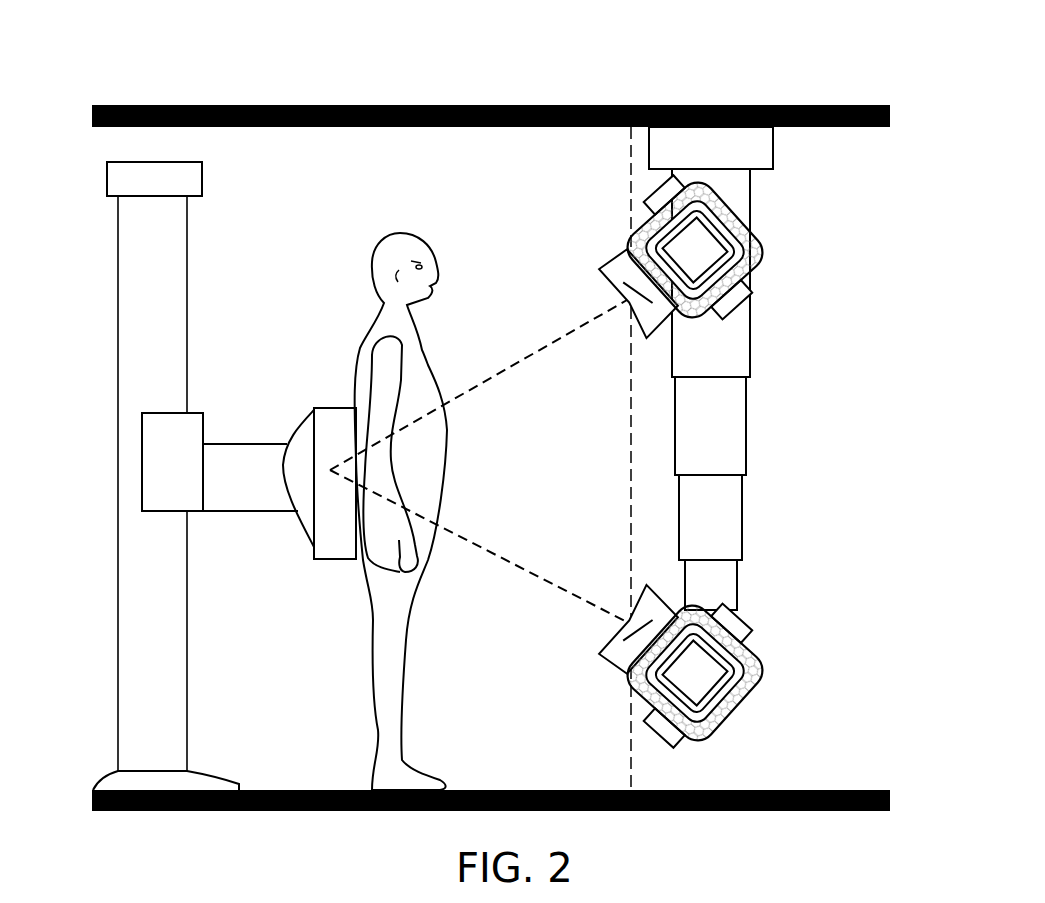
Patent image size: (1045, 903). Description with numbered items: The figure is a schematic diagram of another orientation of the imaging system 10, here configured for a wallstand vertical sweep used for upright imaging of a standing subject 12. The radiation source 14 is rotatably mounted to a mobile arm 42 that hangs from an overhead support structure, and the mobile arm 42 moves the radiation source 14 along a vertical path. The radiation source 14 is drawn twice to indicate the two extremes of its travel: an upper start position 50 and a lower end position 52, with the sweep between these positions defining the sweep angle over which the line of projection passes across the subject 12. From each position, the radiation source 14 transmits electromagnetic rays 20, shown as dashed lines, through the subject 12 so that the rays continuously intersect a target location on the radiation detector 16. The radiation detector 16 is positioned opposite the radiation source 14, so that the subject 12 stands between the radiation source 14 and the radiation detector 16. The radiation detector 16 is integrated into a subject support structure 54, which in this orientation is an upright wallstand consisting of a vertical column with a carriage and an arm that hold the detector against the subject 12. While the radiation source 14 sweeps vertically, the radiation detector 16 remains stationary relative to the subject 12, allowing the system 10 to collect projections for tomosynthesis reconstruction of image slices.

The system 10 is at (140, 68).
The subject 12 is at (400, 232).
The radiation source 14 is at (755, 452).
The radiation detector 16 is at (327, 407).
The electromagnetic rays 20 is at (557, 485).
The mobile arm 42 is at (728, 503).
The start position 50 is at (858, 200).
The end position 52 is at (812, 633).
The subject support structure 54 is at (118, 665).